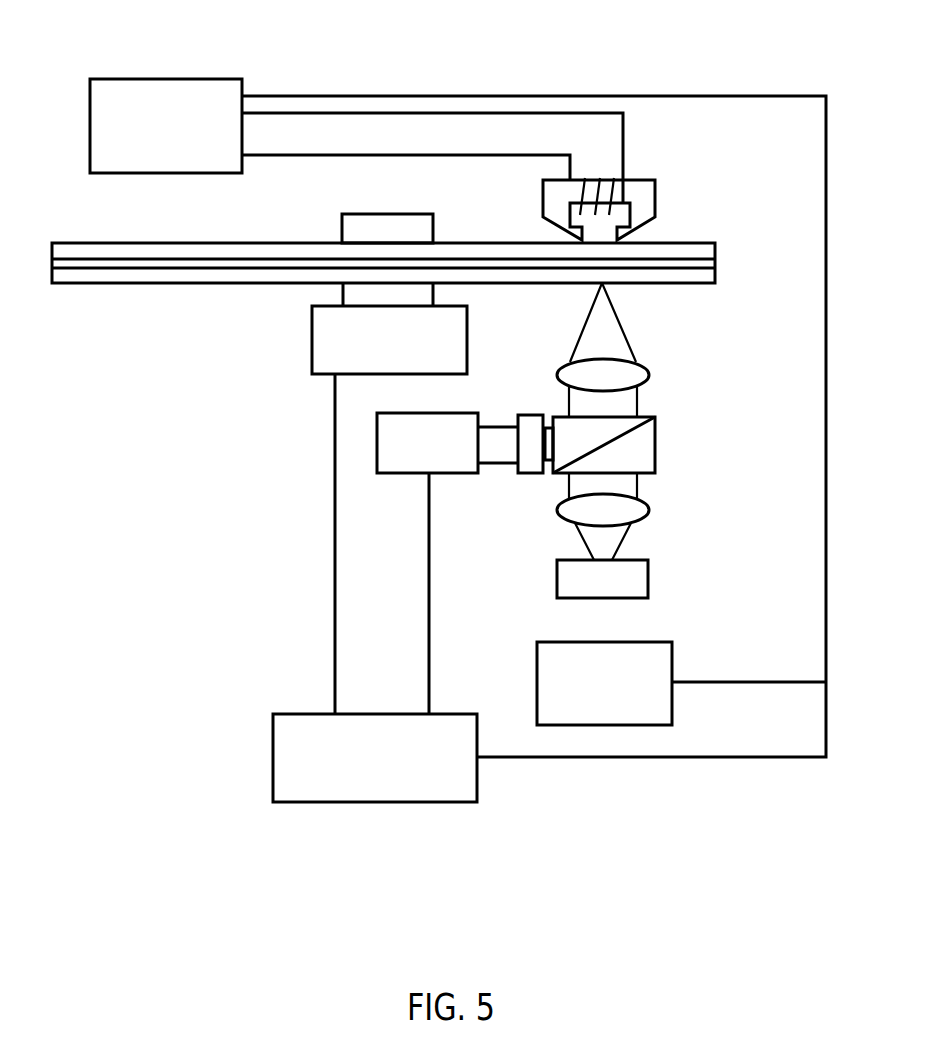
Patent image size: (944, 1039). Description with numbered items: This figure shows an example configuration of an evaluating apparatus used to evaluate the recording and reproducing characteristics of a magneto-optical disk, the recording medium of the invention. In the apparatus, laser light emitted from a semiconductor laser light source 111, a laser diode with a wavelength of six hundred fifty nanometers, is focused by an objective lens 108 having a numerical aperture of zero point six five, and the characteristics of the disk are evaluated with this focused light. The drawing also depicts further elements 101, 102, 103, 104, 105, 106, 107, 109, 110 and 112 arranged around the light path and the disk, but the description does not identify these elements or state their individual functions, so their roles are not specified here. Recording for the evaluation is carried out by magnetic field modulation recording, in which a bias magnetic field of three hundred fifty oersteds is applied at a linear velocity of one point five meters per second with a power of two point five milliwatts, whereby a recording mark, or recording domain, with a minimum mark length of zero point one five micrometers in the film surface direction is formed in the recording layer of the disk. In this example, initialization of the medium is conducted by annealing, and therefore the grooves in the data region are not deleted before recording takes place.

The substrate / wafer stage plate 101 is at (93, 243).
The electromagnetic probe head 102 is at (655, 195).
The stage drive unit 103 is at (312, 338).
The optical detection unit 104 is at (673, 440).
The signal processing unit 105 is at (673, 663).
The drive circuit / power source 106 is at (163, 78).
The control unit 107 is at (372, 802).
The objective lens 108 is at (650, 372).
The beam splitter 109 is at (655, 446).
The condenser lens 110 is at (650, 508).
The semiconductor laser light source 111 is at (644, 573).
The light source 112 is at (377, 440).